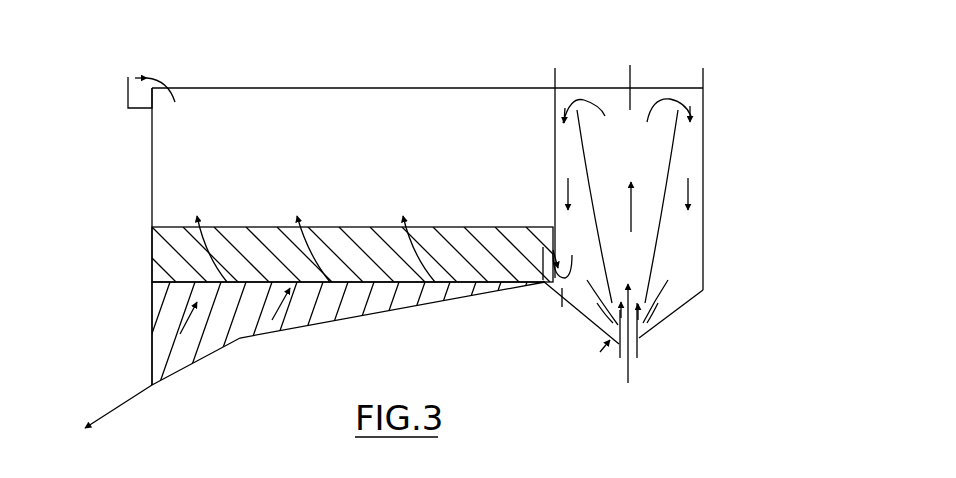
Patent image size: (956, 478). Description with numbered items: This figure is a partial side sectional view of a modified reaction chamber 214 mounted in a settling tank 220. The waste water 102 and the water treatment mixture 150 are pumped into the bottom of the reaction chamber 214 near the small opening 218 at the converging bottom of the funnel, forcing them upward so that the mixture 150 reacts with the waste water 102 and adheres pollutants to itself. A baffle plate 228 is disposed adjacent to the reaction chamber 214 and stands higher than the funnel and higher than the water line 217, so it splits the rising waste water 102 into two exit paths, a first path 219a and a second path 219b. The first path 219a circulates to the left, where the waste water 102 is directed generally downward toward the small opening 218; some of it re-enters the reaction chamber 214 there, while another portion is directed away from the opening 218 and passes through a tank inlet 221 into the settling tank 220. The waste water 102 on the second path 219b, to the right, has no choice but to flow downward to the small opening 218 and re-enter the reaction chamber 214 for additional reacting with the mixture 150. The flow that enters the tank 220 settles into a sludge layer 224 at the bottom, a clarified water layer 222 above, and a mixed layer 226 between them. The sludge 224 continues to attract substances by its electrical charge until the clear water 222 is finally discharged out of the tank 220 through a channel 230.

The channel 230 is at (128, 98).
The water line 217 is at (290, 88).
The clarified water layer 222 is at (422, 102).
The tank 220 is at (152, 145).
The mixed layer 226 is at (157, 262).
The sludge layer 224 is at (163, 348).
The reaction chamber 214 is at (668, 73).
The opening 218 is at (607, 345).
The tank inlet 221 is at (559, 306).
The baffle plate 228 is at (632, 72).
The first path 219a is at (585, 92).
The second path 219b is at (703, 102).
The waste water 102 is at (627, 319).
The water treatment mixture 150 is at (630, 378).